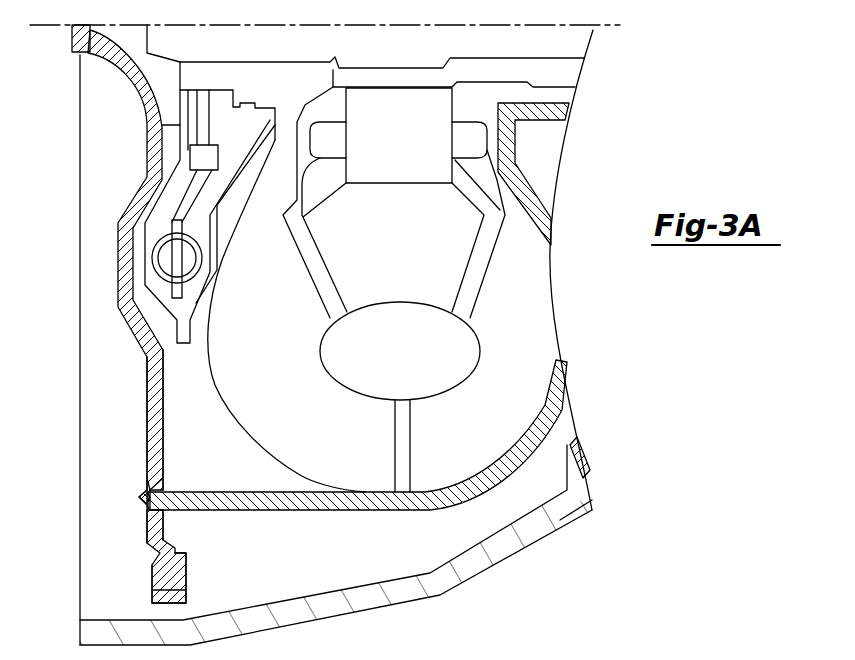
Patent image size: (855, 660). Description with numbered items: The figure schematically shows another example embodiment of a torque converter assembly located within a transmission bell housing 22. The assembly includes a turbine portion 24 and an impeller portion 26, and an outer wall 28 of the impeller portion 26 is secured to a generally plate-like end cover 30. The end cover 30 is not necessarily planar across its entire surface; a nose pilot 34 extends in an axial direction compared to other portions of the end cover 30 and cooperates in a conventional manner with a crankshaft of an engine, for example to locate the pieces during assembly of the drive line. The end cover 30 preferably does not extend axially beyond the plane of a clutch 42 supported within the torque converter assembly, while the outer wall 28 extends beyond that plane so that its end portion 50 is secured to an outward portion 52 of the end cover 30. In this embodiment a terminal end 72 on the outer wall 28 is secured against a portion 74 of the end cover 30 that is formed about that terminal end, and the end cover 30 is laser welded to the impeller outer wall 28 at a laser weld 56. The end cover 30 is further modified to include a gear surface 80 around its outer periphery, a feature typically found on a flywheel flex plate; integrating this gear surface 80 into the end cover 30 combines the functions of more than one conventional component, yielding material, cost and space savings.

The transmission bell housing 22 is at (478, 568).
The turbine portion 24 is at (294, 407).
The impeller portion 26 is at (498, 312).
The outer wall 28 is at (342, 512).
The end cover 30 is at (145, 365).
The nose pilot 34 is at (86, 58).
The clutch 42 is at (142, 257).
The end portion 50 is at (182, 512).
The outward portion 52 is at (146, 460).
The laser weld 56 is at (138, 498).
The terminal end 72 is at (145, 488).
The portion of the end cover 74 is at (145, 507).
The gear surface 80 is at (186, 580).